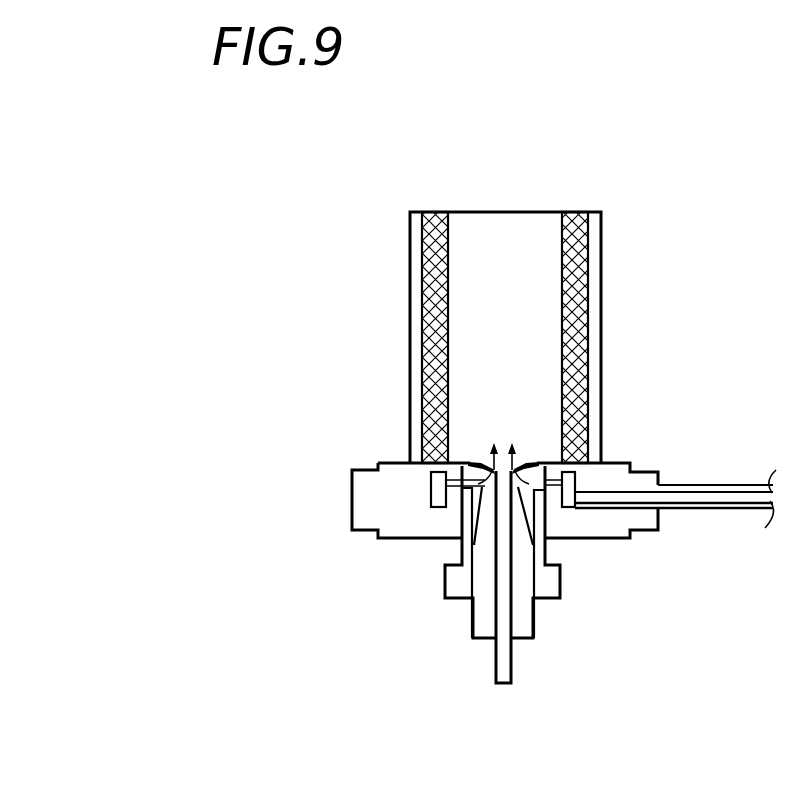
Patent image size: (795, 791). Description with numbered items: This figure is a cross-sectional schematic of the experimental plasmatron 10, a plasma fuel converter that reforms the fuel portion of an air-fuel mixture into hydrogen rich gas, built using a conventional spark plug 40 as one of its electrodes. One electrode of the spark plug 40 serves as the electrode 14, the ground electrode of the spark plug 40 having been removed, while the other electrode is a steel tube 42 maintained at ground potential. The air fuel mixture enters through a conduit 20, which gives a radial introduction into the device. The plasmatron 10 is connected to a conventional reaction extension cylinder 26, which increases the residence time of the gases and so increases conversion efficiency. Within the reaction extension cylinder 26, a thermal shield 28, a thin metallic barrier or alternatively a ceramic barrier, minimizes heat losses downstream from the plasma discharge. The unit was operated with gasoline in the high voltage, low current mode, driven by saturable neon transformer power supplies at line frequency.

The plasmatron 10 is at (362, 357).
The electrode 14 is at (494, 656).
The conduit 20 is at (712, 485).
The reaction extension cylinder 26 is at (420, 268).
The thermal shield 28 is at (586, 268).
The spark plug 40 is at (548, 573).
The steel tube 42 is at (412, 421).